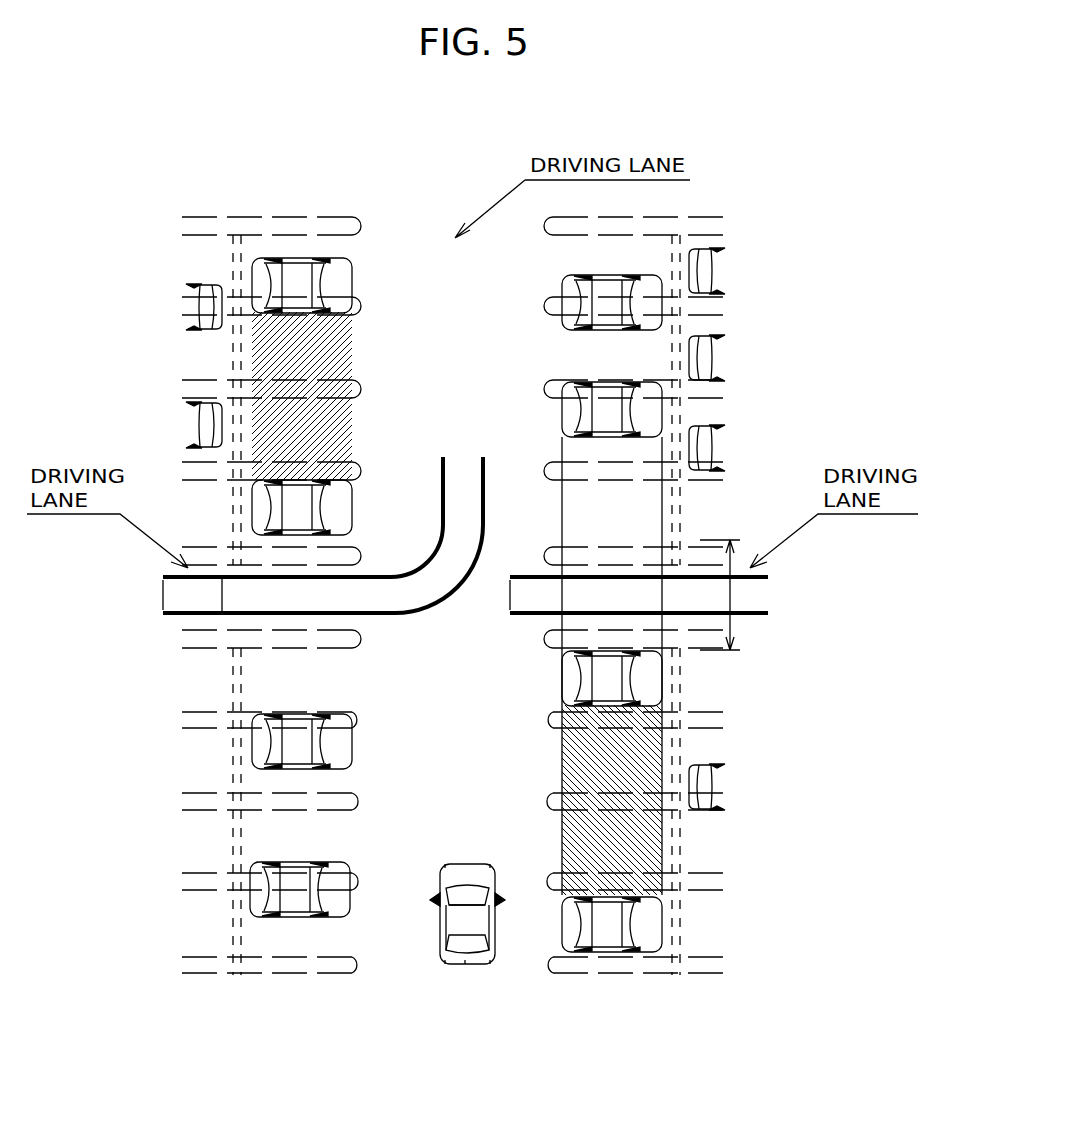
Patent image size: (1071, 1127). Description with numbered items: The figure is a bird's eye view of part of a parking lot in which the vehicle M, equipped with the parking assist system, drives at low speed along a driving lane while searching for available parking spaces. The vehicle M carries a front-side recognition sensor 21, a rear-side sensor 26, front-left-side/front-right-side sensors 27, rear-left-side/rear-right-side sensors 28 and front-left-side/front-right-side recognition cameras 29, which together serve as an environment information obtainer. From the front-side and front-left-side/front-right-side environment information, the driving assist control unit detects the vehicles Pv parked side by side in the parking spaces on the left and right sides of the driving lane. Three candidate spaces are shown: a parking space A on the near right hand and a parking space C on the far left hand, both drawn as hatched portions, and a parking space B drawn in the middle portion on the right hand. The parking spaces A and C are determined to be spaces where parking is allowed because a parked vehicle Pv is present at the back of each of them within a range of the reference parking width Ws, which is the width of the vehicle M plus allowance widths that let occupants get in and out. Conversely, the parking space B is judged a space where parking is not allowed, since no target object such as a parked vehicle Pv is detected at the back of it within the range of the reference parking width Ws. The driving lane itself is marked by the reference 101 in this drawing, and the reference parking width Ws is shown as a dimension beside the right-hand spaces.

The tire tracks 101 is at (498, 608).
The vehicle M is at (465, 911).
The front-side recognition sensor 21 is at (440, 920).
The rear-side sensor 26 is at (467, 964).
The front-left-side/front-right-side sensors 27 is at (446, 864).
The rear-left-side/rear-right-side sensors 28 is at (443, 964).
The front-left-side/front-right-side recognition cameras 29 is at (436, 897).
The parked vehicle Pv is at (195, 283).
The parking space A is at (562, 775).
The parking space B is at (562, 523).
The parking space C is at (352, 410).
The reference parking width Ws is at (735, 595).